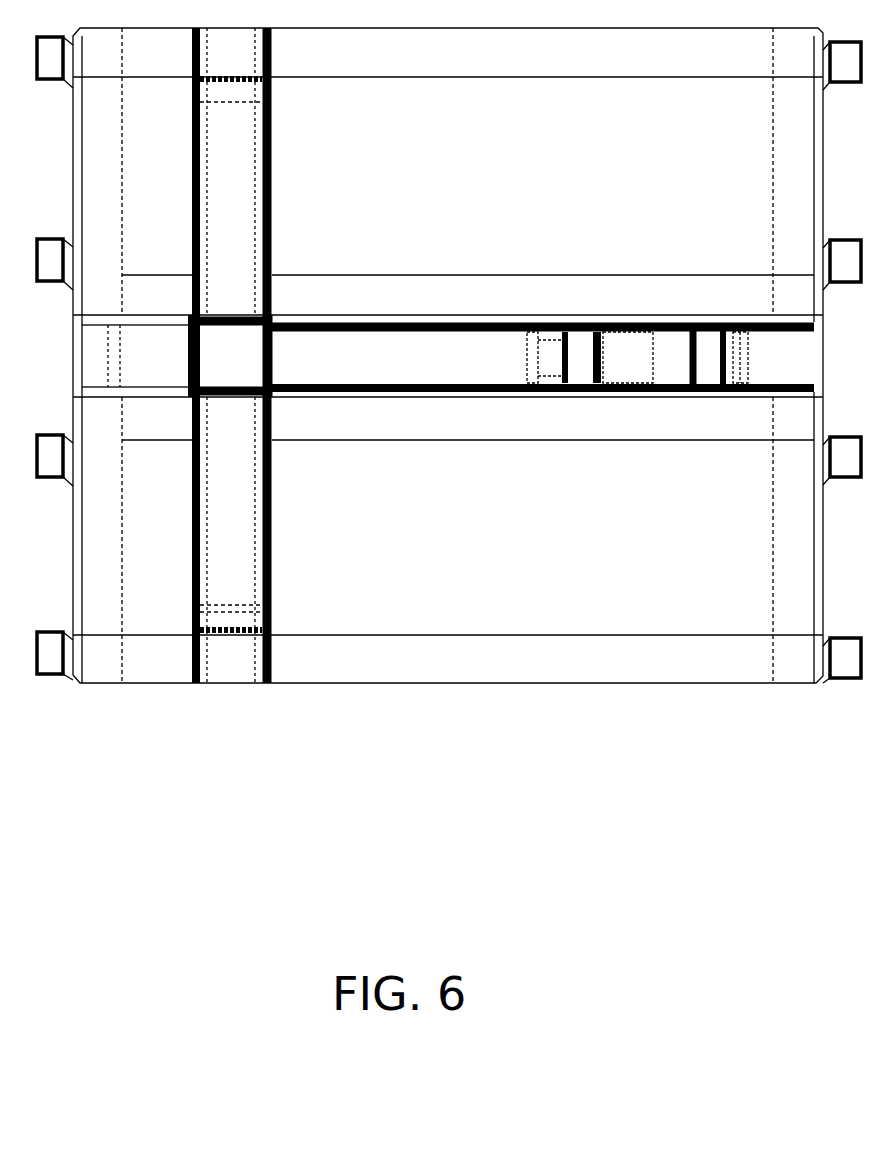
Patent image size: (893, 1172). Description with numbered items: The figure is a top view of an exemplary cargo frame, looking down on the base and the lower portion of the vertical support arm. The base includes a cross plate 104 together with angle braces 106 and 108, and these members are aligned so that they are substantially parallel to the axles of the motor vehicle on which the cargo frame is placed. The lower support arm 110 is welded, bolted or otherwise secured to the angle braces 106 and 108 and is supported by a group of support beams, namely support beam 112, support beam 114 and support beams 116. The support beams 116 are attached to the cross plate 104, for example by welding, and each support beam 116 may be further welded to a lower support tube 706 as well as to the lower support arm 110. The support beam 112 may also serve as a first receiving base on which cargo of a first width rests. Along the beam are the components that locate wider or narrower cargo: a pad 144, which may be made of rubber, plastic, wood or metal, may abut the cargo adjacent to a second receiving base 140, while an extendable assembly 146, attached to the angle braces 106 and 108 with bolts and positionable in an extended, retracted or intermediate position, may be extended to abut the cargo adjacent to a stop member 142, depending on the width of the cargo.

The cross plate 104 is at (449, 355).
The angle brace 106 is at (448, 302).
The angle brace 108 is at (448, 415).
The lower support arm 110 is at (302, 397).
The support beam 112 is at (543, 357).
The support beam 114 is at (136, 356).
The support beam 116 is at (284, 355).
The second receiving base 140 is at (663, 303).
The stop member 142 is at (688, 548).
The pad 144 is at (589, 284).
The extendable assembly 146 is at (640, 420).
The lower support tube 706 is at (272, 168).